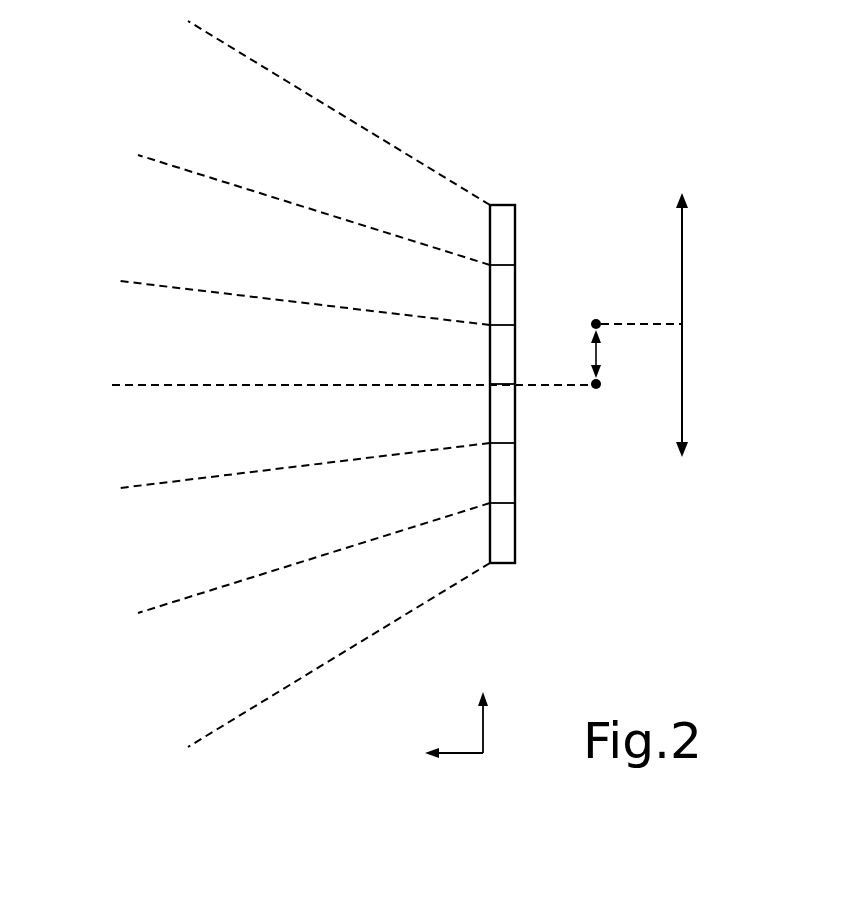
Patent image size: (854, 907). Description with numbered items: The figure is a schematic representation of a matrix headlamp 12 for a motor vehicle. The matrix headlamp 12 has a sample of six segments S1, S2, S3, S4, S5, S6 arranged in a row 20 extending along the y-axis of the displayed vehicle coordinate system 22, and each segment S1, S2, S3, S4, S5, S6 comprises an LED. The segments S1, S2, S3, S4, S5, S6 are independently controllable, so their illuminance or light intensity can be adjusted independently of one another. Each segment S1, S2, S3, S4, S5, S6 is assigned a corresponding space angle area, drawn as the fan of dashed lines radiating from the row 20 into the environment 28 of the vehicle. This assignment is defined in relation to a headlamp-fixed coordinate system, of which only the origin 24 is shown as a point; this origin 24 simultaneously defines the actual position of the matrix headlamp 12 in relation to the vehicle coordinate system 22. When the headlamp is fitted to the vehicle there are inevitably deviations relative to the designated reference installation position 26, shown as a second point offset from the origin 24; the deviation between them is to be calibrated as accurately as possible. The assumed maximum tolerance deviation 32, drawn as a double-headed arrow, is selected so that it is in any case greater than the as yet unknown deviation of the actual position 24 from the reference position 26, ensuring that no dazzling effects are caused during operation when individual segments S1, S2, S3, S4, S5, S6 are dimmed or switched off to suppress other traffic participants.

The matrix headlamp 12 is at (422, 100).
The row 20 is at (468, 337).
The vehicle coordinate system 22 is at (512, 697).
The origin 24 is at (596, 393).
The reference installation position 26 is at (596, 318).
The environment 28 is at (85, 396).
The maximum tolerance deviation 32 is at (682, 257).
The segment S1 is at (497, 238).
The segment S2 is at (497, 297).
The segment S3 is at (497, 357).
The segment S4 is at (497, 413).
The segment S5 is at (497, 475).
The segment S6 is at (497, 533).